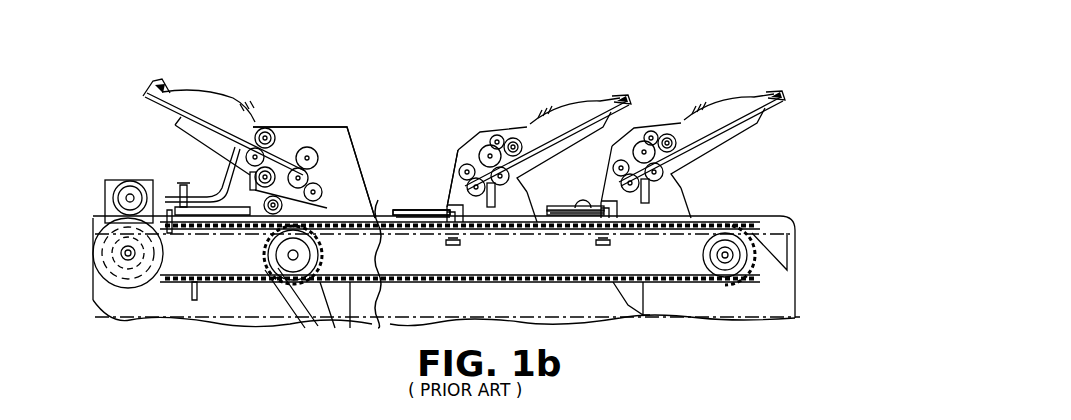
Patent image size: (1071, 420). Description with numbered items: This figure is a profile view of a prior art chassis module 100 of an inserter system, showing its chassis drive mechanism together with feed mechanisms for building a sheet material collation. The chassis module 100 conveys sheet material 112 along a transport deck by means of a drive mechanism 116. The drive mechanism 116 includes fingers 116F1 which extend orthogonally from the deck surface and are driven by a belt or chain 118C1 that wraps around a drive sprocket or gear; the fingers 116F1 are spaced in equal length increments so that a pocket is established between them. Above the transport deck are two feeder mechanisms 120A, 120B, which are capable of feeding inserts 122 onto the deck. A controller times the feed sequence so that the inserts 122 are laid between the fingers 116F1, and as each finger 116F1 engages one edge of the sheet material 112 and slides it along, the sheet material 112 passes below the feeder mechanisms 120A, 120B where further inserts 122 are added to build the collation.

The chassis module 100 is at (670, 72).
The sheet material 112 is at (368, 215).
The drive mechanism 116 is at (266, 286).
The fingers 116F1 is at (474, 221).
The belt or chain 118C1 is at (410, 229).
The feeder mechanism 120A is at (519, 102).
The feeder mechanism 120B is at (725, 166).
The inserts 122 is at (418, 213).